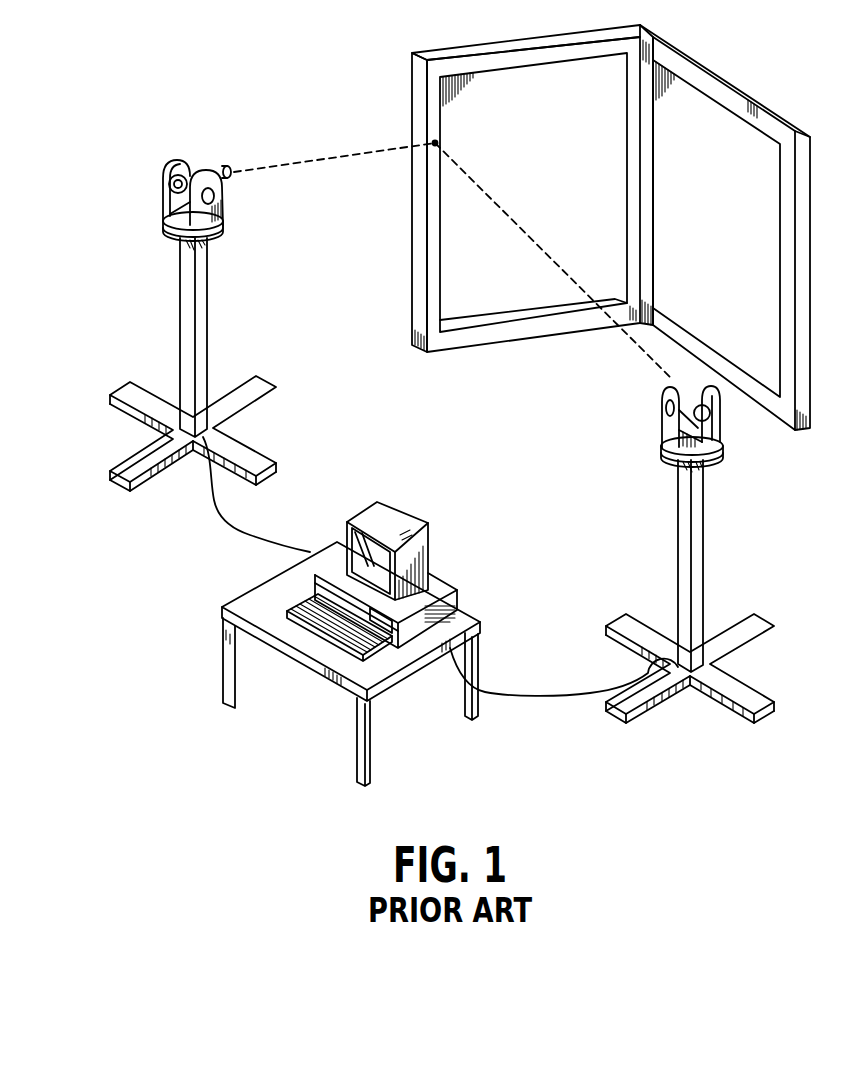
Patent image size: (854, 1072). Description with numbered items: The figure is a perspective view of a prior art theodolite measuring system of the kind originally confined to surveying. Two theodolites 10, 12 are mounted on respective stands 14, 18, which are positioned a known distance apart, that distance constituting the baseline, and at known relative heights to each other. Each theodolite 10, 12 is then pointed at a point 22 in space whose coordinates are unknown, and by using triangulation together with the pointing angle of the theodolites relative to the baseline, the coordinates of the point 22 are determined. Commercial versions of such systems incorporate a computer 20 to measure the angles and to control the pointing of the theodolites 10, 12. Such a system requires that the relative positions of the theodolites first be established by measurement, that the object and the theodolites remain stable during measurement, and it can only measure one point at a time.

The theodolite 10 is at (165, 189).
The theodolite 12 is at (720, 420).
The stand 14 is at (207, 289).
The stand 18 is at (703, 546).
The computer 20 is at (443, 558).
The point 22 is at (435, 144).